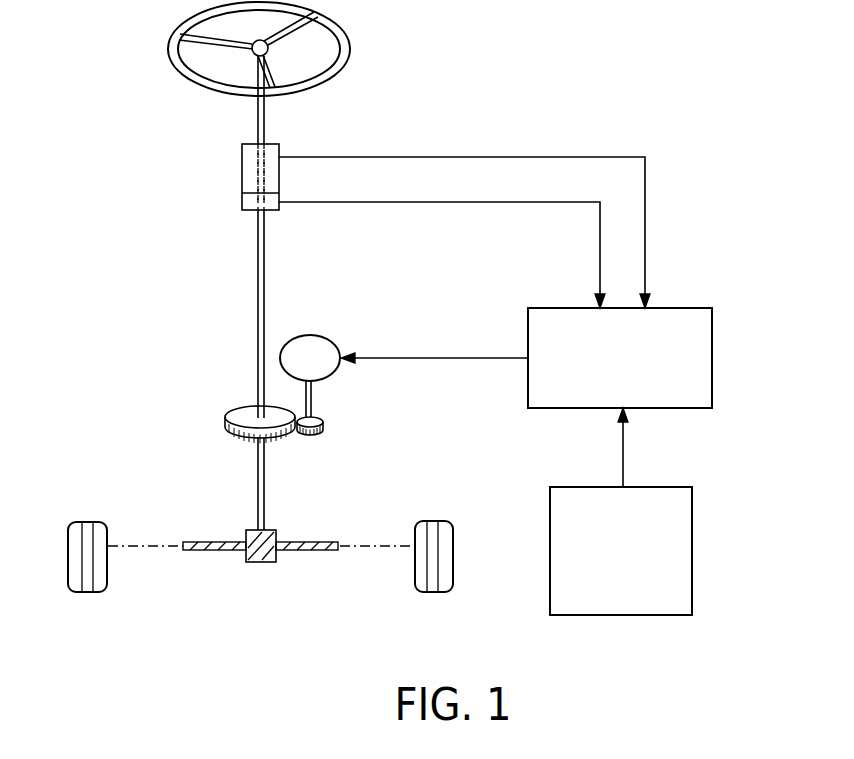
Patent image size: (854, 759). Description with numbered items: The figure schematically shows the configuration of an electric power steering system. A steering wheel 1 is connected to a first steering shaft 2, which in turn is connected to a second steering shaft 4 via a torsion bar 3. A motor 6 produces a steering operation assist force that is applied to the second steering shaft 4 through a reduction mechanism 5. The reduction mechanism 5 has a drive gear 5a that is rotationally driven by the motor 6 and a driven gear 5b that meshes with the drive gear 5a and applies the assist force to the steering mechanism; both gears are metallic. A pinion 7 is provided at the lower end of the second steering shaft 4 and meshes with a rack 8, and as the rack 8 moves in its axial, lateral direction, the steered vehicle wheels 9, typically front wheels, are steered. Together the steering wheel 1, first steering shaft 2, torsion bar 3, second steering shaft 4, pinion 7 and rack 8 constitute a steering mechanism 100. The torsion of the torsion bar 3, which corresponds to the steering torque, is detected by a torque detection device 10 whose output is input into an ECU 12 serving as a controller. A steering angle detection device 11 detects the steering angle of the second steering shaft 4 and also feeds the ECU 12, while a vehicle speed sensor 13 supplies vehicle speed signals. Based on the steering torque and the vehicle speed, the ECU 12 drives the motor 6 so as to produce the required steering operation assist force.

The steering wheel 1 is at (352, 35).
The first steering shaft 2 is at (256, 119).
The torsion bar 3 is at (255, 168).
The second steering shaft 4 is at (256, 330).
The reduction mechanism 5 is at (279, 437).
The drive gear 5a is at (320, 413).
The driven gear 5b is at (240, 412).
The motor 6 is at (313, 336).
The pinion 7 is at (262, 563).
The rack 8 is at (198, 540).
The steered vehicle wheels 9 is at (84, 521).
The torque detection device 10 is at (280, 146).
The steering angle detection device 11 is at (242, 203).
The ECU 12 is at (715, 345).
The vehicle speed sensor 13 is at (695, 543).
The steering mechanism 100 is at (193, 277).